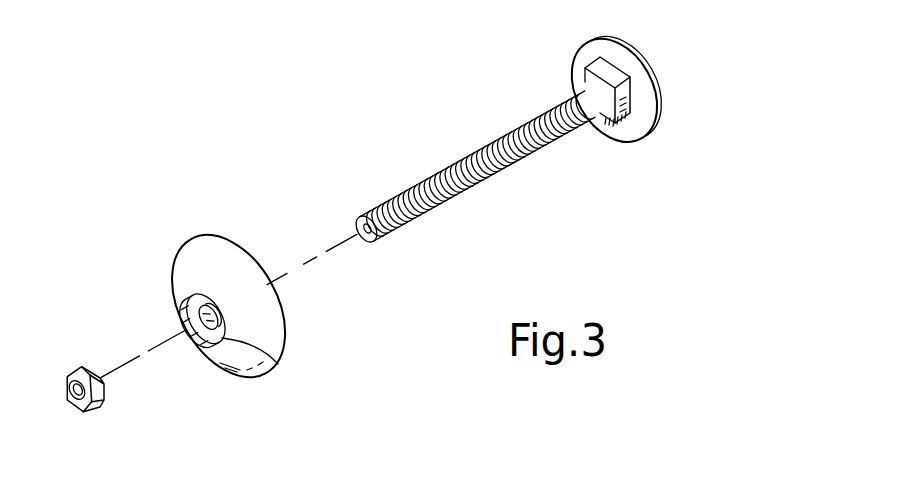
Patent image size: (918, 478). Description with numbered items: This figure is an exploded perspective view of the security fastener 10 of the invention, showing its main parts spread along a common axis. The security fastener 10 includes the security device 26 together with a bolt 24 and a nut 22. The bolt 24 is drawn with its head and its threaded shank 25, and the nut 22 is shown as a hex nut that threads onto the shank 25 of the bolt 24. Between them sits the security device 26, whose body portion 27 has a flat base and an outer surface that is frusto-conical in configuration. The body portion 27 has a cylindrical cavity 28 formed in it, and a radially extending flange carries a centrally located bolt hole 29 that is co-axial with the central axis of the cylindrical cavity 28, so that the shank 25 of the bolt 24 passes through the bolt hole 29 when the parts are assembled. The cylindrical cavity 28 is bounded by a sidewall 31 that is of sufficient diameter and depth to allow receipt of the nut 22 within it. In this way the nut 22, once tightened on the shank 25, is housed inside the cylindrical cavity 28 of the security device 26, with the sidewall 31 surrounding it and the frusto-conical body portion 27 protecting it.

The security fastener 10 is at (440, 95).
The nut 22 is at (102, 405).
The bolt 24 is at (650, 72).
The threaded shaft 25 is at (470, 187).
The security device 26 is at (158, 231).
The body portion 27 is at (203, 238).
The cylindrical cavity 28 is at (177, 304).
The bolt hole 29 is at (233, 329).
The sidewall 31 is at (279, 363).